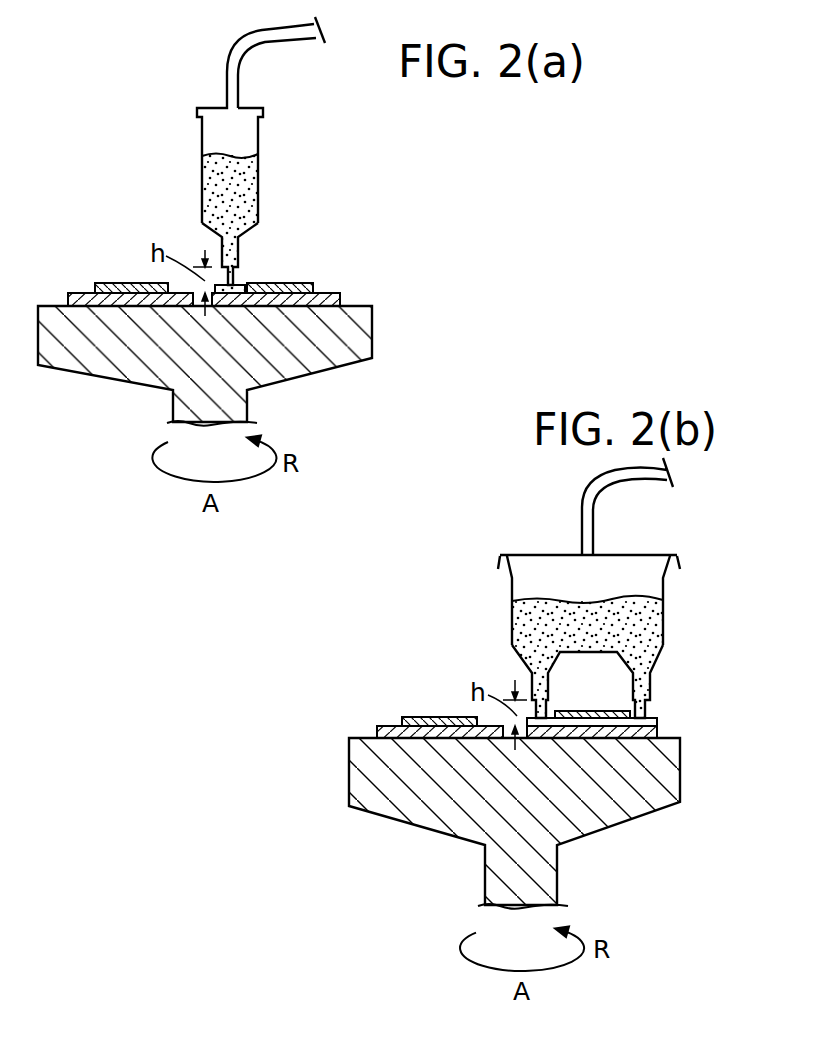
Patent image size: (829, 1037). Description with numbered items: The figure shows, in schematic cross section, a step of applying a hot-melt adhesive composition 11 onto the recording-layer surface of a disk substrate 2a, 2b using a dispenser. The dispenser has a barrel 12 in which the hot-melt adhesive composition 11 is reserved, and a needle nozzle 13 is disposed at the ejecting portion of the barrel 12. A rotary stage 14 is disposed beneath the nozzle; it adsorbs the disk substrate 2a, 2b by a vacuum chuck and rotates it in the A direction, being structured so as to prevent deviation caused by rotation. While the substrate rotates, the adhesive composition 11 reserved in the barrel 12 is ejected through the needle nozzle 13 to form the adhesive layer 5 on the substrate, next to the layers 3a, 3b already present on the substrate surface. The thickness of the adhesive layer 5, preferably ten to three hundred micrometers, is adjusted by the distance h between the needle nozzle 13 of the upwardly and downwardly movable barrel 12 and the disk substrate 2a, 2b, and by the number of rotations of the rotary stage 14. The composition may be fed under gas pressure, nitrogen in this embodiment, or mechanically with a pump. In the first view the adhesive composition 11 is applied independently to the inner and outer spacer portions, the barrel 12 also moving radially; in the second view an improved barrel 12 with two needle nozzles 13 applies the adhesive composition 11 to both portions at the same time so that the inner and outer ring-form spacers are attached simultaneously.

In FIG. 2a, the rotary stage 14 is at (362, 357).
In FIG. 2b, the rotary stage 14 is at (673, 790).
In FIG. 2a, the disk substrate 2a is at (342, 299).
In FIG. 2b, the disk substrate 2a is at (660, 732).
In FIG. 2a, the disk substrate 2b is at (345, 289).
In FIG. 2b, the disk substrate 2b is at (652, 720).
In FIG. 2a, the electrode layer 3a is at (308, 283).
In FIG. 2b, the electrode layer 3a is at (425, 717).
In FIG. 2a, the electrode layer 3b is at (329, 261).
In FIG. 2b, the electrode layer 3b is at (395, 661).
In FIG. 2a, the adhesive layer 5 is at (237, 283).
In FIG. 2b, the adhesive layer 5 is at (633, 715).
In FIG. 2a, the hot-melt adhesive composition 11 is at (250, 184).
In FIG. 2b, the hot-melt adhesive composition 11 is at (655, 633).
In FIG. 2a, the barrel 12 is at (258, 136).
In FIG. 2b, the barrel 12 is at (665, 581).
In FIG. 2a, the needle nozzle 13 is at (224, 262).
In FIG. 2b, the needle nozzle 13 is at (678, 682).